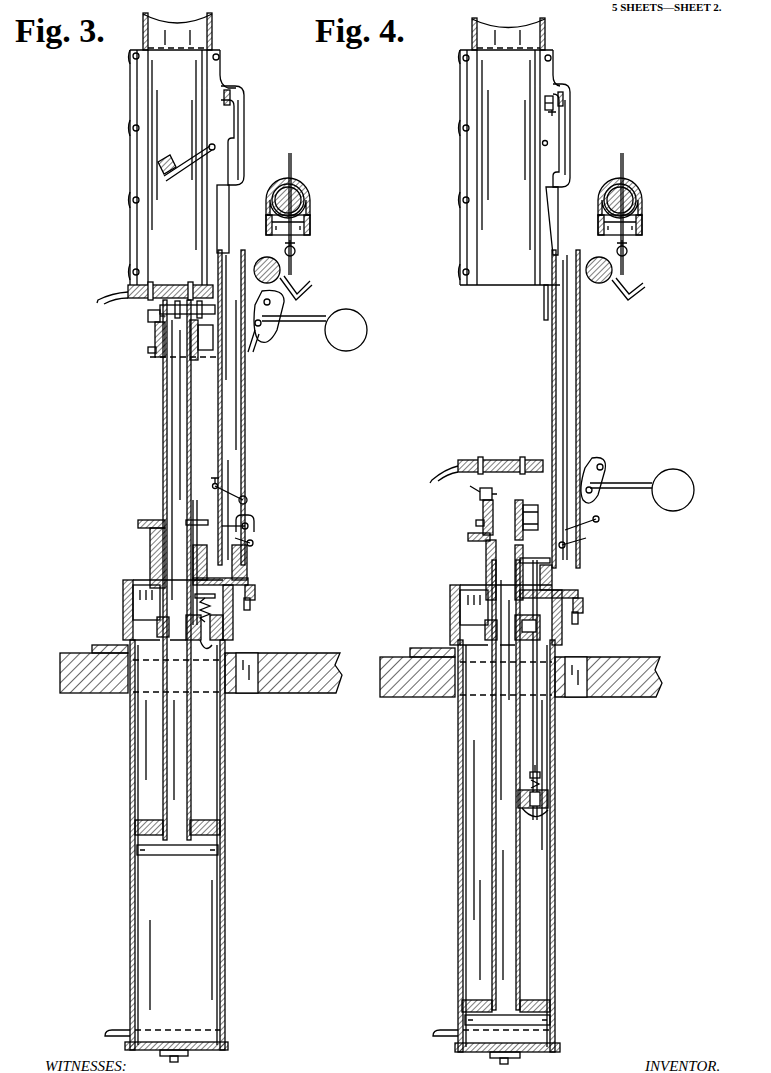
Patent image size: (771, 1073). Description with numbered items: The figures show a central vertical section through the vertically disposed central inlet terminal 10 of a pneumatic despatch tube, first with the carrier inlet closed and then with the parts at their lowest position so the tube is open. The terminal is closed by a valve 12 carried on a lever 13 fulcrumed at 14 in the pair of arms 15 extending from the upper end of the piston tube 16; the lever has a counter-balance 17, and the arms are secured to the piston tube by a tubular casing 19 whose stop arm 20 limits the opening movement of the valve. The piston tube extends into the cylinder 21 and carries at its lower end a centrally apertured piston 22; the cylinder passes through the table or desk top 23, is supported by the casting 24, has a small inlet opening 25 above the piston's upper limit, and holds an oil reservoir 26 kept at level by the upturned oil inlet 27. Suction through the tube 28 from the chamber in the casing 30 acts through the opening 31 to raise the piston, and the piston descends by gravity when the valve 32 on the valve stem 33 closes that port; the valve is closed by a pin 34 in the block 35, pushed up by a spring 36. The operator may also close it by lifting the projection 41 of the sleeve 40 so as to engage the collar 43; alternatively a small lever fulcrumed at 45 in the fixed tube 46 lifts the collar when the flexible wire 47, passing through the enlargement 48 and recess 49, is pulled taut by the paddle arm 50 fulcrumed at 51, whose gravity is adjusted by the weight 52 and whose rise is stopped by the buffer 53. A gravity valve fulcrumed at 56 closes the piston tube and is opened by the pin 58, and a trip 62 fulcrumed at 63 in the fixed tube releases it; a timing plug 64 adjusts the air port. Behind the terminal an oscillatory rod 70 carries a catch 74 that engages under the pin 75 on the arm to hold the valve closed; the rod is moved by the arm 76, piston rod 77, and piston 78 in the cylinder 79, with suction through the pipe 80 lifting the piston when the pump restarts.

In FIG. 3, the central inlet terminal 10 is at (136, 160).
In FIG. 3, the valve 12 is at (168, 286).
In FIG. 4, the valve 12 is at (496, 460).
In FIG. 3, the lever 13 is at (97, 300).
In FIG. 4, the lever 13 is at (432, 477).
In FIG. 3, the fulcrum 14 is at (260, 340).
In FIG. 3, the arms 15 is at (276, 311).
In FIG. 4, the arms 15 is at (606, 478).
In FIG. 3, the piston tube 16 is at (163, 425).
In FIG. 3, the counter-balance 17 is at (350, 314).
In FIG. 4, the counter-balance 17 is at (649, 476).
In FIG. 3, the tubular casing 19 is at (157, 336).
In FIG. 4, the tubular casing 19 is at (483, 518).
In FIG. 3, the stop arm 20 is at (148, 316).
In FIG. 4, the stop arm 20 is at (480, 492).
In FIG. 3, the cylinder 21 is at (226, 893).
In FIG. 4, the cylinder 21 is at (458, 958).
In FIG. 3, the piston 22 is at (208, 857).
In FIG. 4, the piston 22 is at (550, 1015).
In FIG. 3, the table or desk top 23 is at (290, 694).
In FIG. 4, the table or desk top 23 is at (424, 698).
In FIG. 3, the casting 24 is at (123, 610).
In FIG. 4, the casting 24 is at (450, 610).
In FIG. 3, the inlet opening 25 is at (130, 818).
In FIG. 4, the inlet opening 25 is at (460, 824).
In FIG. 3, the oil reservoir 26 is at (228, 1045).
In FIG. 4, the oil reservoir 26 is at (560, 1047).
In FIG. 3, the oil inlet 27 is at (105, 1040).
In FIG. 4, the oil inlet 27 is at (433, 1041).
In FIG. 3, the tube 28 is at (251, 605).
In FIG. 4, the tube 28 is at (579, 614).
In FIG. 3, the casing 30 is at (250, 580).
In FIG. 4, the casing 30 is at (580, 590).
In FIG. 3, the opening 31 is at (258, 591).
In FIG. 4, the opening 31 is at (583, 600).
In FIG. 3, the valve 32 is at (215, 606).
In FIG. 4, the valve 32 is at (528, 627).
In FIG. 3, the valve rod or stem 33 is at (192, 552).
In FIG. 3, the pin 34 is at (226, 640).
In FIG. 4, the pin 34 is at (550, 797).
In FIG. 3, the block 35 is at (207, 648).
In FIG. 4, the block 35 is at (545, 817).
In FIG. 4, the spring 36 is at (545, 783).
In FIG. 3, the sleeve 40 is at (150, 548).
In FIG. 4, the sleeve 40 is at (486, 555).
In FIG. 3, the projection 41 is at (145, 522).
In FIG. 4, the projection 41 is at (470, 535).
In FIG. 3, the collar 43 is at (201, 520).
In FIG. 3, the fulcrum 45 is at (250, 522).
In FIG. 3, the tube 46 is at (245, 447).
In FIG. 4, the tube 46 is at (580, 377).
In FIG. 3, the flexible wire 47 is at (229, 237).
In FIG. 4, the flexible wire 47 is at (557, 230).
In FIG. 3, the enlargement 48 is at (245, 144).
In FIG. 4, the enlargement 48 is at (571, 153).
In FIG. 3, the recess 49 is at (240, 124).
In FIG. 4, the recess 49 is at (562, 130).
In FIG. 3, the paddle arm 50 is at (188, 160).
In FIG. 4, the paddle arm 50 is at (545, 114).
In FIG. 3, the fulcrum 51 is at (212, 143).
In FIG. 4, the fulcrum 51 is at (542, 143).
In FIG. 3, the weight 52 is at (166, 161).
In FIG. 4, the weight 52 is at (557, 113).
In FIG. 3, the buffer 53 is at (232, 97).
In FIG. 4, the buffer 53 is at (565, 100).
In FIG. 3, the fulcrum 56 is at (187, 305).
In FIG. 3, the pin 58 is at (202, 305).
In FIG. 4, the pin 58 is at (544, 313).
In FIG. 3, the trip 62 is at (214, 485).
In FIG. 3, the fulcrum 63 is at (246, 497).
In FIG. 3, the timing plug 64 is at (148, 350).
In FIG. 4, the timing plug 64 is at (476, 523).
In FIG. 3, the oscillatory rod 70 is at (281, 270).
In FIG. 4, the oscillatory rod 70 is at (613, 270).
In FIG. 3, the catch 74 is at (302, 290).
In FIG. 4, the catch 74 is at (639, 291).
In FIG. 4, the pin 75 is at (601, 464).
In FIG. 3, the arm 76 is at (296, 252).
In FIG. 4, the arm 76 is at (628, 253).
In FIG. 3, the piston rod 77 is at (300, 197).
In FIG. 4, the piston rod 77 is at (632, 197).
In FIG. 3, the piston 78 is at (311, 227).
In FIG. 4, the piston 78 is at (643, 227).
In FIG. 3, the cylinder 79 is at (306, 212).
In FIG. 4, the cylinder 79 is at (638, 212).
In FIG. 3, the pipe 80 is at (297, 182).
In FIG. 4, the pipe 80 is at (628, 182).